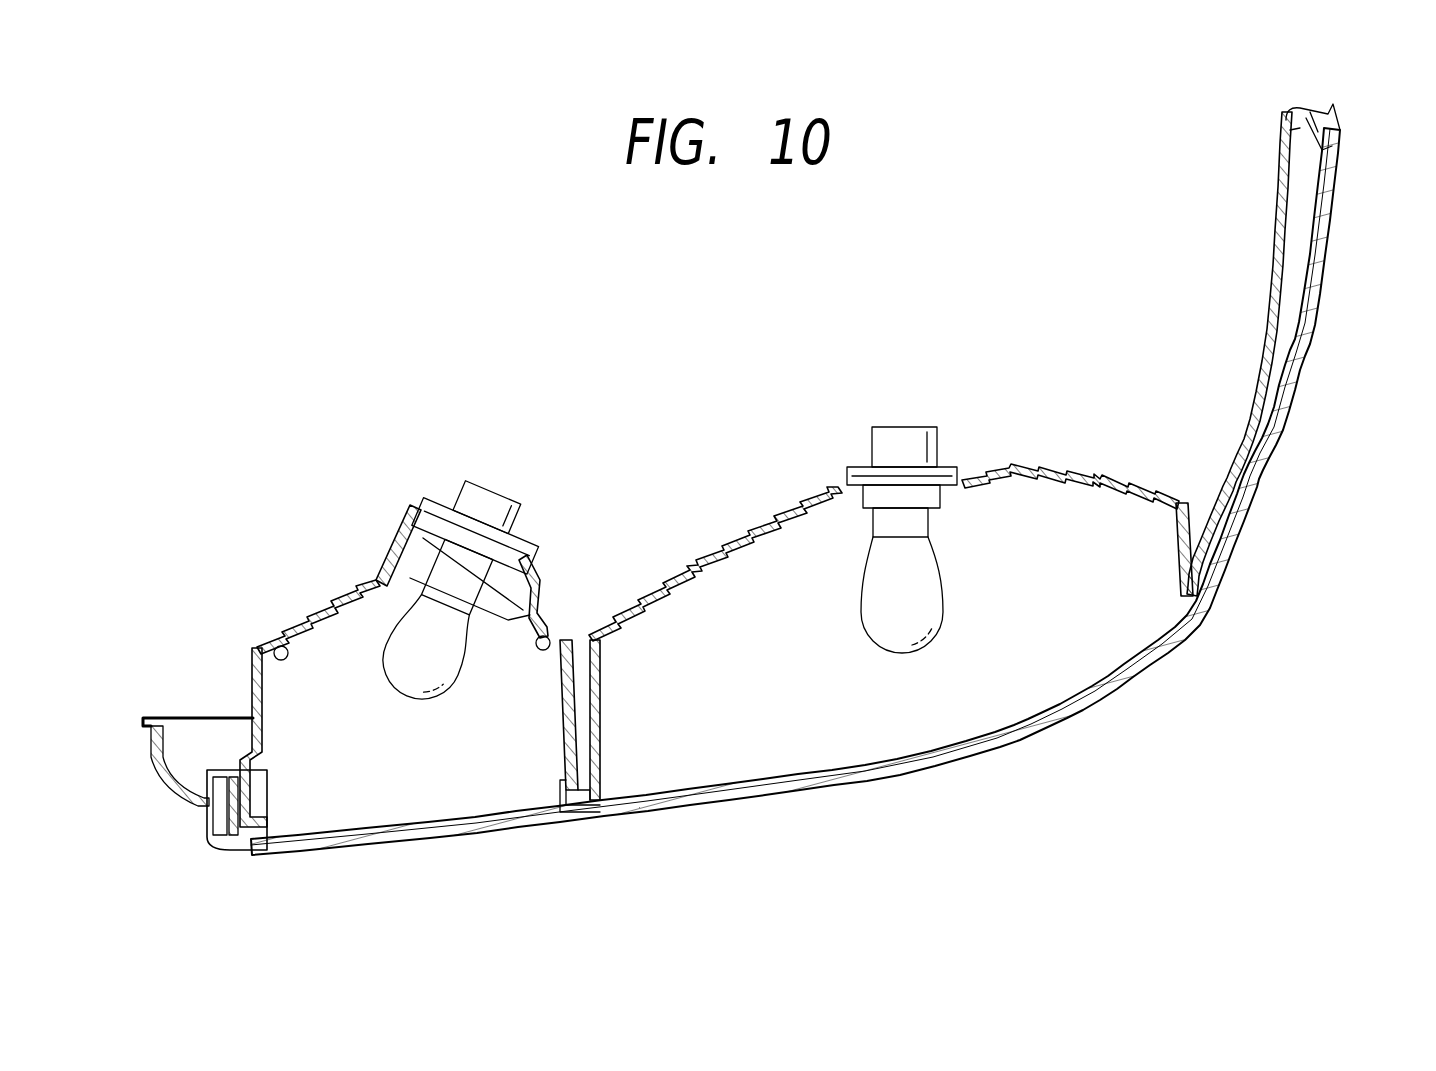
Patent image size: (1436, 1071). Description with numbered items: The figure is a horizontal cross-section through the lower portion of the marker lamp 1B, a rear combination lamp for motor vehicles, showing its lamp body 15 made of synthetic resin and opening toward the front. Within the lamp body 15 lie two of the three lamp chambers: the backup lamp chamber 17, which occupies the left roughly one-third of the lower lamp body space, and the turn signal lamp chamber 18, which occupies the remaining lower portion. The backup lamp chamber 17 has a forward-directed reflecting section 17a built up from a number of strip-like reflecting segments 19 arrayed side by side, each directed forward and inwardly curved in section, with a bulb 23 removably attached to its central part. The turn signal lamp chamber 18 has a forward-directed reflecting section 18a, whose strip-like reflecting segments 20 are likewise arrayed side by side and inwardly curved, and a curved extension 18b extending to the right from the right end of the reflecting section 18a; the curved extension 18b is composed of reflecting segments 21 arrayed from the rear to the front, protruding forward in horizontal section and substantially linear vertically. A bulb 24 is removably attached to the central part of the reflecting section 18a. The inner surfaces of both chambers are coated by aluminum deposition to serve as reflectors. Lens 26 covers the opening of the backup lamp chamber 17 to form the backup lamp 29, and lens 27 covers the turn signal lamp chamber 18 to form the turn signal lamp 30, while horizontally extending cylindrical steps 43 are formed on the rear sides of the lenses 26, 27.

The marker lamp 1B is at (1192, 148).
The lamp body 15 is at (645, 615).
The backup lamp chamber 17 is at (314, 608).
The reflecting section 17a is at (358, 588).
The turn signal lamp chamber 18 is at (707, 554).
The reflecting section 18a is at (1093, 481).
The curved extension 18b is at (1256, 408).
The reflecting segments 19 is at (283, 646).
The reflecting segments 20 is at (691, 587).
The reflecting segments 21 is at (1291, 237).
The bulb 23 is at (386, 674).
The bulb 24 is at (945, 613).
The lens 26 is at (524, 832).
The lens 27 is at (815, 797).
The backup lamp 29 is at (518, 754).
The turn signal lamp 30 is at (1084, 601).
The cylindrical steps 43 is at (1035, 714).